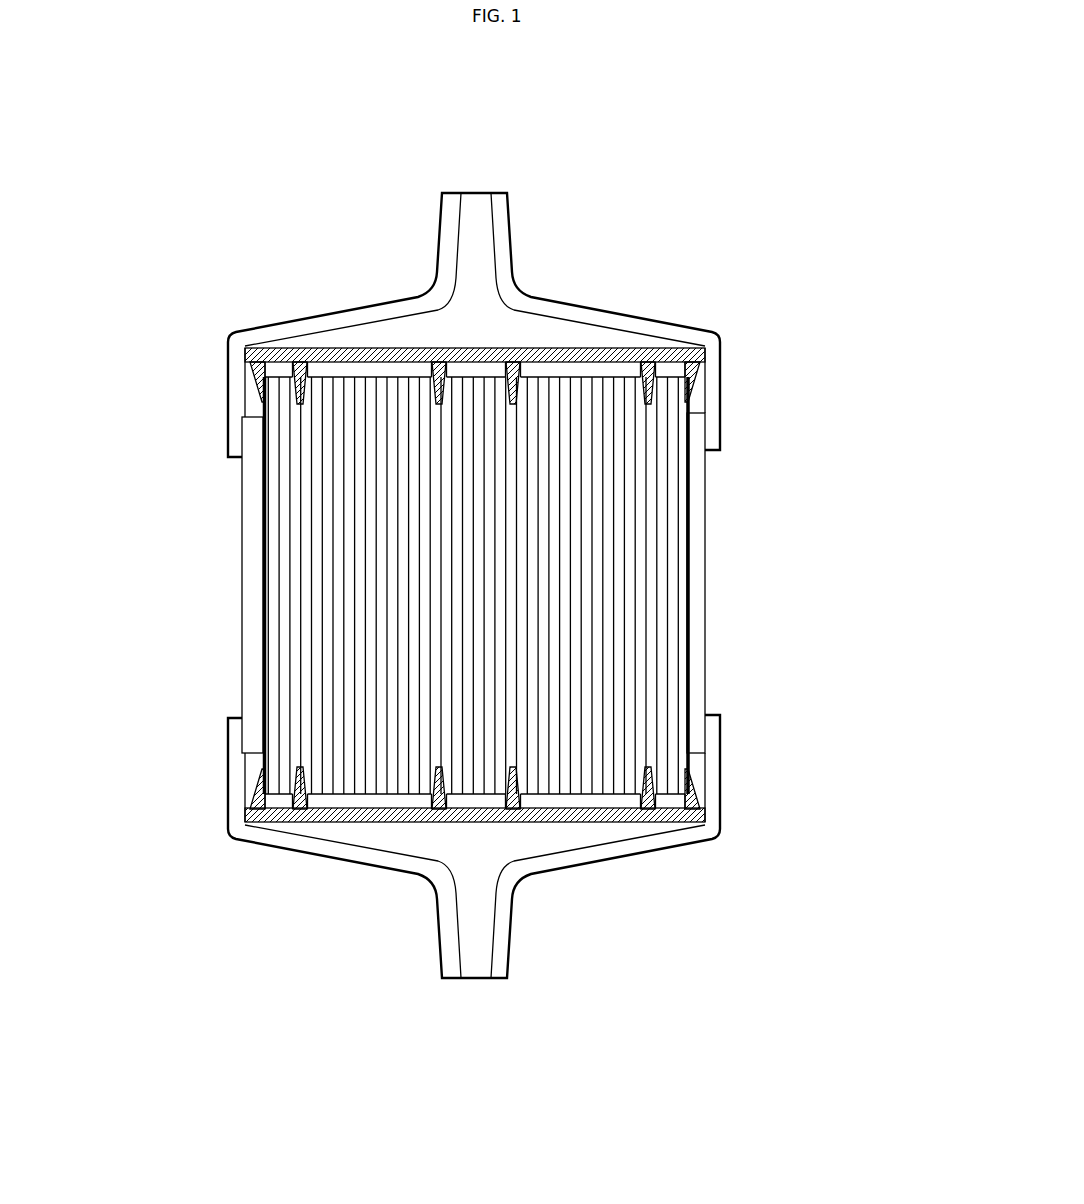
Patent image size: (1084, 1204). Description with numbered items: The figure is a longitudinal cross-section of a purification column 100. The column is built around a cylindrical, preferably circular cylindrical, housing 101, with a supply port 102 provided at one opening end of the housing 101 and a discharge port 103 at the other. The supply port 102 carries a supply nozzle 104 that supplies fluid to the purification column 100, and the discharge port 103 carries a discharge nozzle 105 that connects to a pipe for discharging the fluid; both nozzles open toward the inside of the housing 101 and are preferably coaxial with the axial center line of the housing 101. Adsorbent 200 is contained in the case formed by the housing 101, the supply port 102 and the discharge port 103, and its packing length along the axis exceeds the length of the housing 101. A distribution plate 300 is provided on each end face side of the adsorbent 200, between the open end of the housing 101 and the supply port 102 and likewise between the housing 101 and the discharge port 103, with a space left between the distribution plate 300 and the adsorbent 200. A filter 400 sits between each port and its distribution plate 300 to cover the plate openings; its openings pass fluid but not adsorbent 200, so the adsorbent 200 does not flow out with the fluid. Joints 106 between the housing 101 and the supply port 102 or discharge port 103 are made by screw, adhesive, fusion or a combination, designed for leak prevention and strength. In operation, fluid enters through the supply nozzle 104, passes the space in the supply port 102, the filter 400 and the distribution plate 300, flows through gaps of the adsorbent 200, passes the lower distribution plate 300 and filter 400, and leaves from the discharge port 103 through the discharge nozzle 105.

The purification column 100 is at (719, 221).
The housing 101 is at (236, 659).
The supply port 102 is at (552, 298).
The discharge port 103 is at (392, 870).
The supply nozzle 104 is at (498, 210).
The discharge nozzle 105 is at (498, 940).
The joint 106 is at (240, 444).
The adsorbent 200 is at (655, 622).
The distribution plate 300 is at (262, 365).
The filter 400 is at (383, 352).